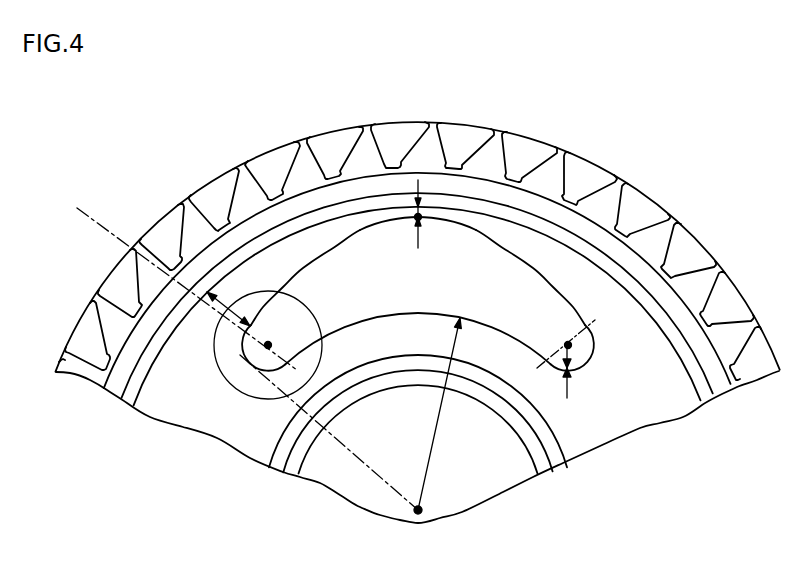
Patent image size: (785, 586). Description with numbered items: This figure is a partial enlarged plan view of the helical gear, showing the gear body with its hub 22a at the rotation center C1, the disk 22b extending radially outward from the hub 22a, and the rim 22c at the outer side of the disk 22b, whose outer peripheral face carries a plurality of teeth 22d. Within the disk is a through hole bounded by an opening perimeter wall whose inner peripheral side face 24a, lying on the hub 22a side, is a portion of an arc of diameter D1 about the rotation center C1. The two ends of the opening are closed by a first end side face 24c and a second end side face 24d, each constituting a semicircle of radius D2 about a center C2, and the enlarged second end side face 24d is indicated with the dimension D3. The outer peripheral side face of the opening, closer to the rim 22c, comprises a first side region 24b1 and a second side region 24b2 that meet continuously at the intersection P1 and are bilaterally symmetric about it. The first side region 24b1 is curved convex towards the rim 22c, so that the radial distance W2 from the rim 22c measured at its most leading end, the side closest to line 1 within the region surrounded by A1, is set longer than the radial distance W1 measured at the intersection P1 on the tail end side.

The line 1 is at (235, 350).
The hub 22a is at (560, 460).
The disk 22b is at (577, 288).
The rim 22c is at (476, 192).
The teeth 22d is at (508, 165).
The inner peripheral side face 24a is at (290, 290).
The first side region 24b1 is at (303, 266).
The second side region 24b2 is at (543, 278).
The first end side face 24c is at (651, 316).
The second end side face 24d is at (248, 360).
The region A1 is at (217, 362).
The rotation center C1 is at (418, 514).
The rotation center C2 is at (268, 348).
The diameter D1 is at (443, 414).
The radius D2 is at (581, 372).
The dimension D3 is at (557, 278).
The intersection P1 is at (418, 215).
The distance W1 is at (419, 210).
The distance W2 is at (234, 296).